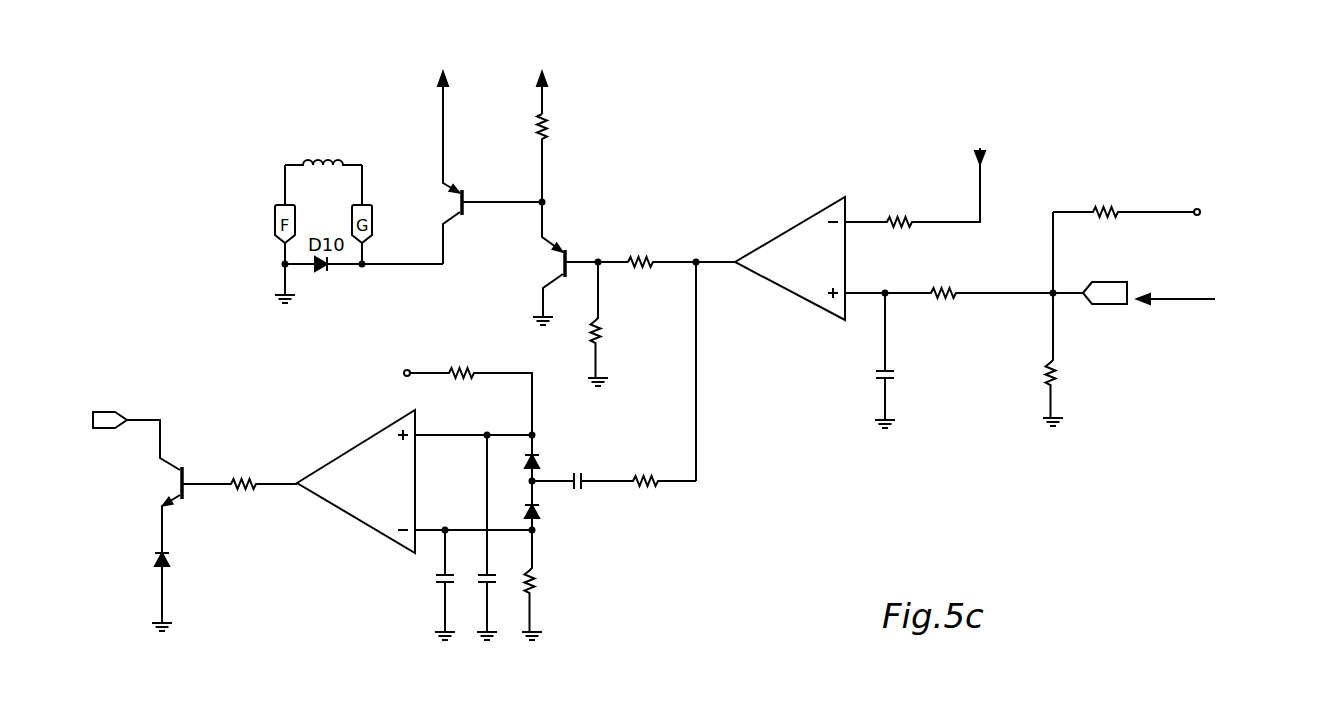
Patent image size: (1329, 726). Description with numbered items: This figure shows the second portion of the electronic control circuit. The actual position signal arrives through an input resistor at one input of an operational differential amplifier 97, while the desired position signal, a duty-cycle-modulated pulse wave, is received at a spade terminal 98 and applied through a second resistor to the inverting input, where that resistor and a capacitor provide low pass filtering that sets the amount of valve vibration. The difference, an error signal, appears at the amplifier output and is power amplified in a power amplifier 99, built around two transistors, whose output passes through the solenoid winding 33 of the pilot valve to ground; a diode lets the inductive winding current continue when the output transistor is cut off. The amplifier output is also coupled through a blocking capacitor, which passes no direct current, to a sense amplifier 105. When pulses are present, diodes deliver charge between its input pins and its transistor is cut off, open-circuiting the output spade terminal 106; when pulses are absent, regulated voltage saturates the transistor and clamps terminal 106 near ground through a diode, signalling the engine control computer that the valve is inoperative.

The solenoid winding 33 is at (324, 158).
The power amplifier 99 is at (602, 155).
The operational differential amplifier 97 is at (787, 368).
The spade terminal 98 is at (1105, 282).
The sense amplifier 105 is at (602, 530).
The output spade terminal 106 is at (112, 410).